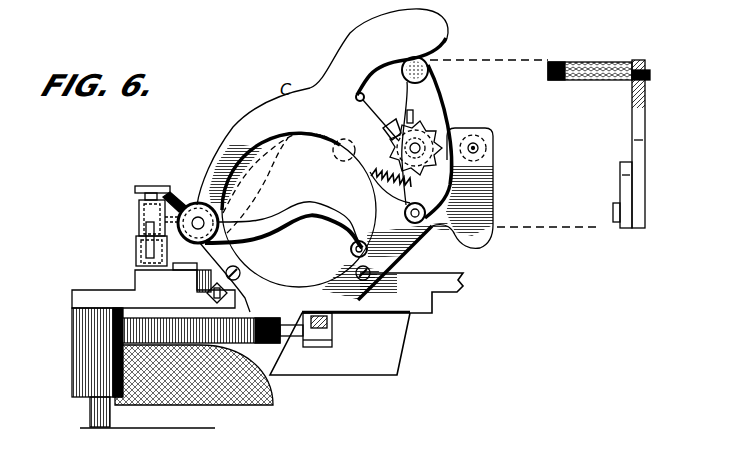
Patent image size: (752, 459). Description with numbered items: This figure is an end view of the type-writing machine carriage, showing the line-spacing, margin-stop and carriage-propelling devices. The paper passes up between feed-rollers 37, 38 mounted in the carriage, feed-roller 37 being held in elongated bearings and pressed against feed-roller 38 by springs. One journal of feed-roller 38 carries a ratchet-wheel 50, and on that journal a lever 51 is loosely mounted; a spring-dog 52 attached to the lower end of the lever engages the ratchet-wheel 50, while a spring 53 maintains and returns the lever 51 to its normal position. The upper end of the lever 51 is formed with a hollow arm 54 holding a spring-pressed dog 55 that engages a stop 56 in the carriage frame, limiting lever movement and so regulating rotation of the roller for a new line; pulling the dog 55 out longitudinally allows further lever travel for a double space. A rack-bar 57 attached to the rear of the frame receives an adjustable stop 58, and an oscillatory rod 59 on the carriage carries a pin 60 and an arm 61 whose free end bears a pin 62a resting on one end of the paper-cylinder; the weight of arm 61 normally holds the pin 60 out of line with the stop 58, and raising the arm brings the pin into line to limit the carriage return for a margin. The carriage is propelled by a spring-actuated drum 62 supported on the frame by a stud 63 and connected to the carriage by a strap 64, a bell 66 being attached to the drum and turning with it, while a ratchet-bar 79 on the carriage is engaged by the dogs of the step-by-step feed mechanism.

The feed-roller 37 is at (474, 134).
The feed-roller 38 is at (400, 122).
The ratchet-wheel 50 is at (390, 129).
The lever 51 is at (436, 93).
The spring-dog 52 is at (457, 195).
The spring 53 is at (375, 178).
The hollow arm 54 is at (428, 62).
The spring-pressed dog 55 is at (376, 58).
The stop 56 is at (356, 93).
The rack-bar 57 is at (141, 240).
The adjustable stop 58 is at (140, 213).
The oscillatory rod 59 is at (205, 221).
The pin 60 is at (175, 195).
The arm 61 is at (283, 232).
The spring-actuated drum 62 is at (272, 341).
The pin 62a is at (352, 250).
The stud 63 is at (202, 286).
The strap 64 is at (150, 314).
The bell 66 is at (247, 400).
The ratchet-bar 79 is at (336, 333).